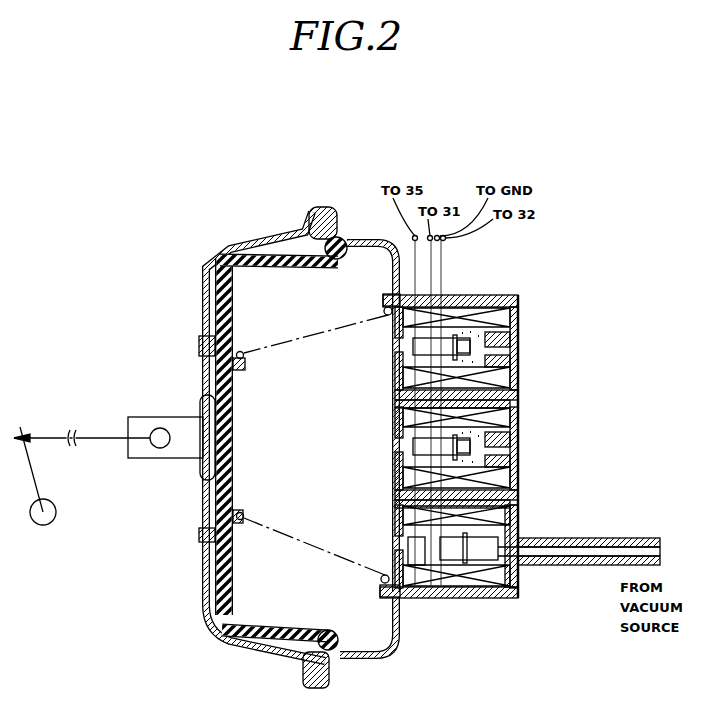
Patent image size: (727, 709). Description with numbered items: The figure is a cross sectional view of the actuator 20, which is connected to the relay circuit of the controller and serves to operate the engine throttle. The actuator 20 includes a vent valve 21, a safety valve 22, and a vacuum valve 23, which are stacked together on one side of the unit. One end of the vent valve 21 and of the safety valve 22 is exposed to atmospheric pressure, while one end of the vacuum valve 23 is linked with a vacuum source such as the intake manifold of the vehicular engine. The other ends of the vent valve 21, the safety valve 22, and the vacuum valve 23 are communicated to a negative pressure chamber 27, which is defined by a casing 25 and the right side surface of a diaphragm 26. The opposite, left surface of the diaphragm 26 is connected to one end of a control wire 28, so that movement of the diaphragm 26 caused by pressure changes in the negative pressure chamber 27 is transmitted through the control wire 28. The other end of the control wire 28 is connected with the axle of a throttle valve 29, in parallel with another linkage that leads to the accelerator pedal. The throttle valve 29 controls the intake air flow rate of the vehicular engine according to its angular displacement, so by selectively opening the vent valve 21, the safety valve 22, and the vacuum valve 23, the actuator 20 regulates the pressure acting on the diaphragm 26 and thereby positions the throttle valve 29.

The actuator 20 is at (355, 232).
The vent valve 21 is at (518, 351).
The safety valve 22 is at (518, 448).
The vacuum valve 23 is at (518, 572).
The casing 25 is at (395, 625).
The diaphragm 26 is at (292, 626).
The negative pressure chamber 27 is at (327, 455).
The control wire 28 is at (100, 443).
The throttle valve 29 is at (43, 526).